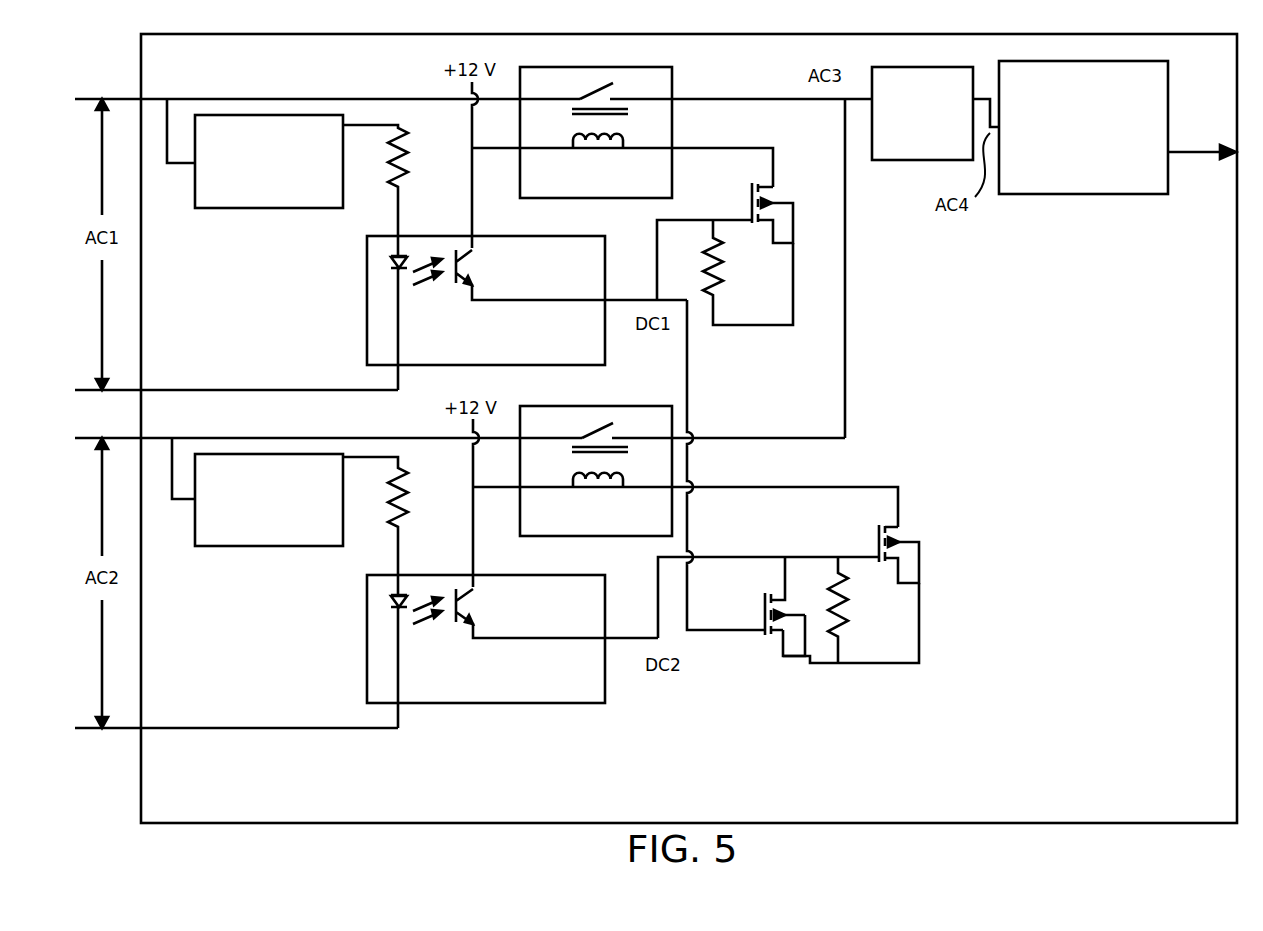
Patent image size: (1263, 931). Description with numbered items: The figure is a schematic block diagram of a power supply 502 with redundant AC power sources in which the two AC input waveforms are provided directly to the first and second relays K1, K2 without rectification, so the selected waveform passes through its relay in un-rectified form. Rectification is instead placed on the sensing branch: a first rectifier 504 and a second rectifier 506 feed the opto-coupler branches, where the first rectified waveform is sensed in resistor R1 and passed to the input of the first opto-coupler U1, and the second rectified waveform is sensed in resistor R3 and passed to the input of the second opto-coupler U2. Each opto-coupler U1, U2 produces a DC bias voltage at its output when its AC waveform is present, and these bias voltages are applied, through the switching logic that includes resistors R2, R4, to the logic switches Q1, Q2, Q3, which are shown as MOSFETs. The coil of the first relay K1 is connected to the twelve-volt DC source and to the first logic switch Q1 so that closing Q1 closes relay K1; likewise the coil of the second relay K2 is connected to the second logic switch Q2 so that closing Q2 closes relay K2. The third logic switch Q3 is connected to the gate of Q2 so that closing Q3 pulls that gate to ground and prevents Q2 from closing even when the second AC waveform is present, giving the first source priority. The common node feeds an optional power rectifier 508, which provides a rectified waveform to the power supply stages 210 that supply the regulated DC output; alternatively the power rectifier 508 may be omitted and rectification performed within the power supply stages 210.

The power supply 502 is at (689, 428).
The first rectifier 504 is at (255, 153).
The second rectifier 506 is at (257, 492).
The power rectifier 508 is at (935, 113).
The power supply stages 210 is at (1117, 127).
The first relay K1 is at (622, 132).
The second relay K2 is at (685, 471).
The first opto-coupler U1 is at (527, 300).
The second opto-coupler U2 is at (512, 639).
The resistor R1 is at (390, 257).
The resistor R2 is at (748, 272).
The resistor R3 is at (390, 592).
The resistor R4 is at (852, 610).
The first logic switch Q1 is at (786, 209).
The second logic switch Q2 is at (913, 548).
The third logic switch Q3 is at (777, 614).